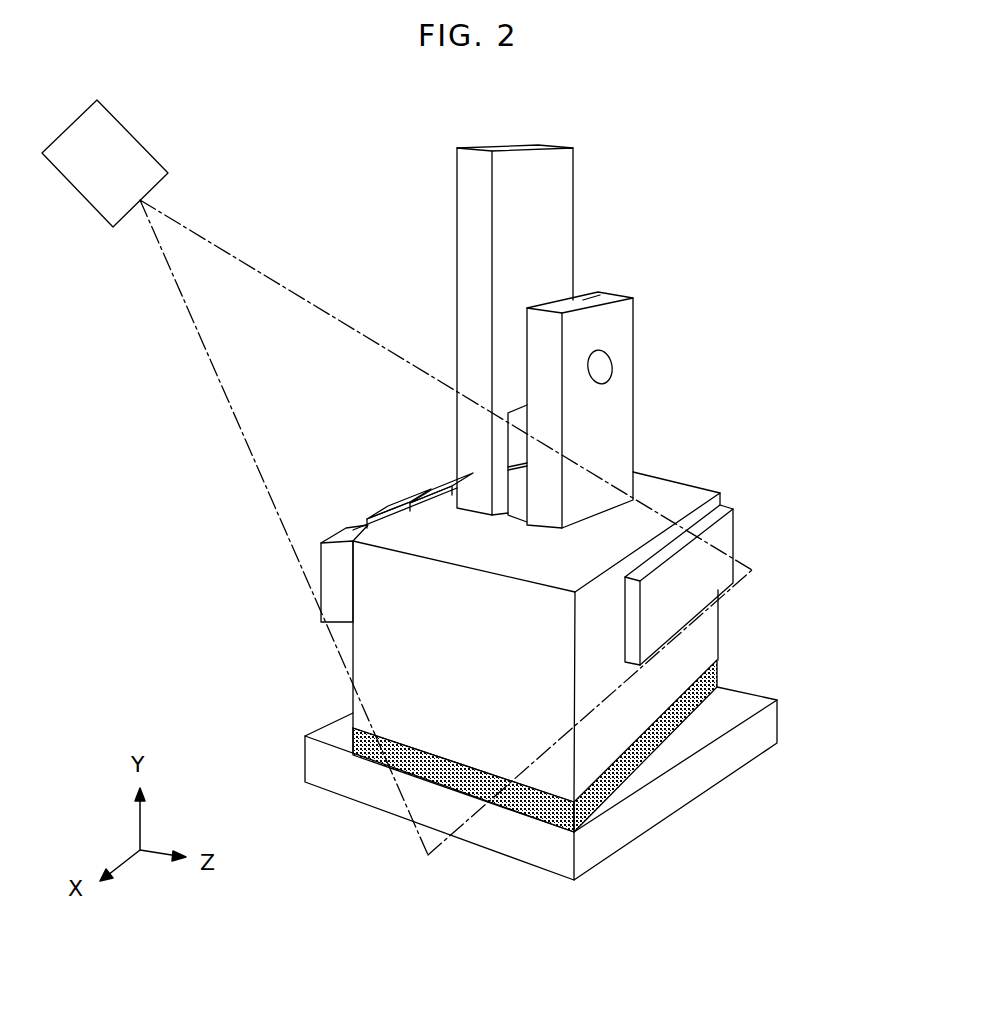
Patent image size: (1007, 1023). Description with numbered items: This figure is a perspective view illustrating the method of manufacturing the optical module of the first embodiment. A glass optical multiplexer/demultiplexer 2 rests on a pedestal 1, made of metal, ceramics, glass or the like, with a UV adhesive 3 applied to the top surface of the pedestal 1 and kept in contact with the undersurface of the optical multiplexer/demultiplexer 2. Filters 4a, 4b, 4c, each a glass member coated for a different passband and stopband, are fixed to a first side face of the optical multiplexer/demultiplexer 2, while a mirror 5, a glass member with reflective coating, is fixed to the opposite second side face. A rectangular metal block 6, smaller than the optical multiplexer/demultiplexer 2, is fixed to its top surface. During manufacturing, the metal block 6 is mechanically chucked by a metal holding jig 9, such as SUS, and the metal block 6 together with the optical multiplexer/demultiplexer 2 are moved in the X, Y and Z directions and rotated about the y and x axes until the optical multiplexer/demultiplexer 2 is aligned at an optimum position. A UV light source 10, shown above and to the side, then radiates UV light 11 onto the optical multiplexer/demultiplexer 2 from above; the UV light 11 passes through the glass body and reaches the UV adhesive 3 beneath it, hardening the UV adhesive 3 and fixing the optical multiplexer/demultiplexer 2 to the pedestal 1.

The pedestal 1 is at (767, 727).
The optical multiplexer/demultiplexer 2 is at (678, 497).
The UV adhesive 3 is at (723, 668).
The filter 4a is at (340, 527).
The filter 4b is at (382, 512).
The filter 4c is at (422, 495).
The mirror 5 is at (736, 524).
The metal block 6 is at (516, 497).
The holding jig 9 is at (563, 240).
The UV light source 10 is at (133, 157).
The UV light 11 is at (277, 290).